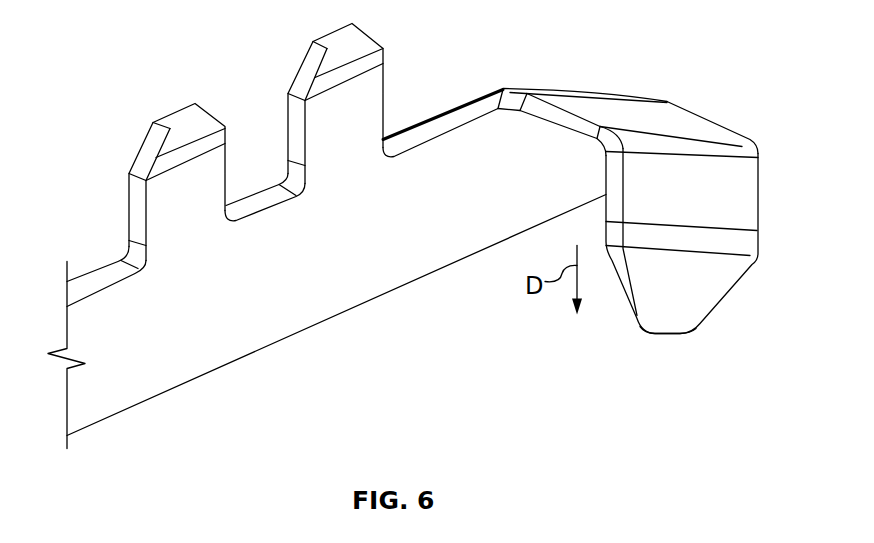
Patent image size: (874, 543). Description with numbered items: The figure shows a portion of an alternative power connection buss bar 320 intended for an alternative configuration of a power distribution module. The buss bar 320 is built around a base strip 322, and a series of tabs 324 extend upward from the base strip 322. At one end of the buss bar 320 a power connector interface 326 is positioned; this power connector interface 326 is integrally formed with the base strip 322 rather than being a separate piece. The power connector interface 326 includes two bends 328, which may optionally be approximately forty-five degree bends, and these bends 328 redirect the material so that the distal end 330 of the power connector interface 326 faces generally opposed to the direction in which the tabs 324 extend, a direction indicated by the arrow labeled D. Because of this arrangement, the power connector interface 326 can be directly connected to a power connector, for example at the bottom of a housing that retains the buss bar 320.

The power connection buss bar 320 is at (101, 44).
The base strip 322 is at (333, 305).
The tabs 324 is at (190, 128).
The power connector interface 326 is at (750, 214).
The bends 328 is at (621, 95).
The distal end 330 is at (668, 335).